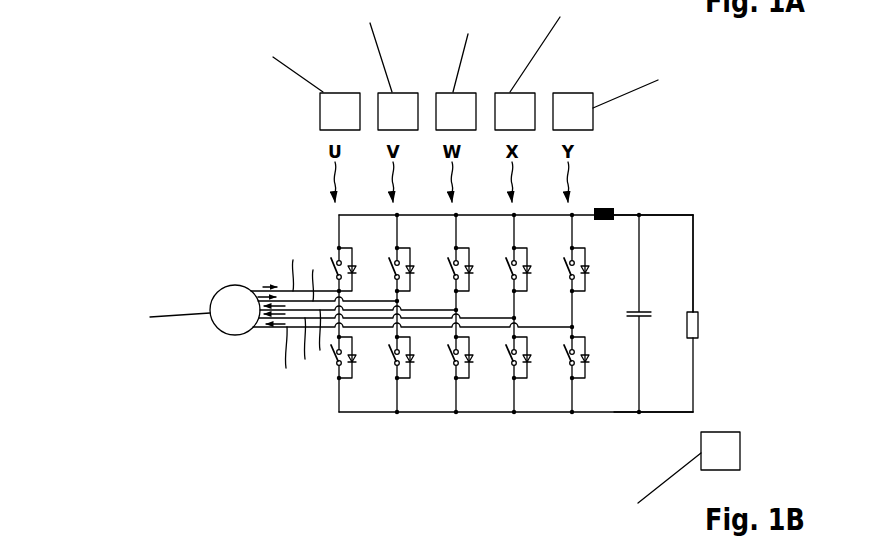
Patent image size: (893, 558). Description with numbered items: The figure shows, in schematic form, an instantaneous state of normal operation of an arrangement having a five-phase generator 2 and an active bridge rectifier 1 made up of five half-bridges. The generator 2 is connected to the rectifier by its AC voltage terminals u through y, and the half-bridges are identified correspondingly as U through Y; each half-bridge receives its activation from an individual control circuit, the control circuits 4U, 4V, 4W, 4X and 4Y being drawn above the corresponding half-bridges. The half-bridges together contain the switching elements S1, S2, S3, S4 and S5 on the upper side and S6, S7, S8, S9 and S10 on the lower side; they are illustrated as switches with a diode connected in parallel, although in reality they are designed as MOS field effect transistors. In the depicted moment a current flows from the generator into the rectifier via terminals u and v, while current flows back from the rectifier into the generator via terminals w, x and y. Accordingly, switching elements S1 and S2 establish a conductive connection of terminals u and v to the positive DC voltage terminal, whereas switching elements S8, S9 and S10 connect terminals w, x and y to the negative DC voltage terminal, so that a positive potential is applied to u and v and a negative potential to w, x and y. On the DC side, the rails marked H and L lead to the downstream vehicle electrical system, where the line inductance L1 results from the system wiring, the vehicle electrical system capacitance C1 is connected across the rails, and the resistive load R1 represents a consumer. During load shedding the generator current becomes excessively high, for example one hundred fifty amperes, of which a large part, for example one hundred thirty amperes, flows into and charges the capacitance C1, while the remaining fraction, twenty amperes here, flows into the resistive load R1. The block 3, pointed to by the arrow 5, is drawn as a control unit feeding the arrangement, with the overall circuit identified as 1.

The active bridge rectifier 1 is at (501, 315).
The generator 2 is at (235, 285).
The control unit 3 is at (719, 431).
The control circuit 4U is at (360, 99).
The control circuit 4V is at (418, 99).
The control circuit 4W is at (476, 99).
The control circuit 4X is at (535, 99).
The control circuit 4Y is at (593, 99).
The output circuit 5 is at (653, 193).
The switching element S1 is at (358, 267).
The switching element S2 is at (416, 267).
The switching element S3 is at (475, 267).
The switching element S4 is at (533, 267).
The switching element S5 is at (591, 267).
The switching element S6 is at (361, 367).
The switching element S7 is at (419, 367).
The switching element S8 is at (478, 367).
The switching element S9 is at (536, 367).
The switching element S10 is at (594, 367).
The line inductance L1 is at (602, 207).
The vehicle electrical system capacitance C1 is at (646, 307).
The resistive load R1 is at (703, 323).
The high-potential terminal H is at (612, 266).
The low-potential terminal L is at (612, 363).